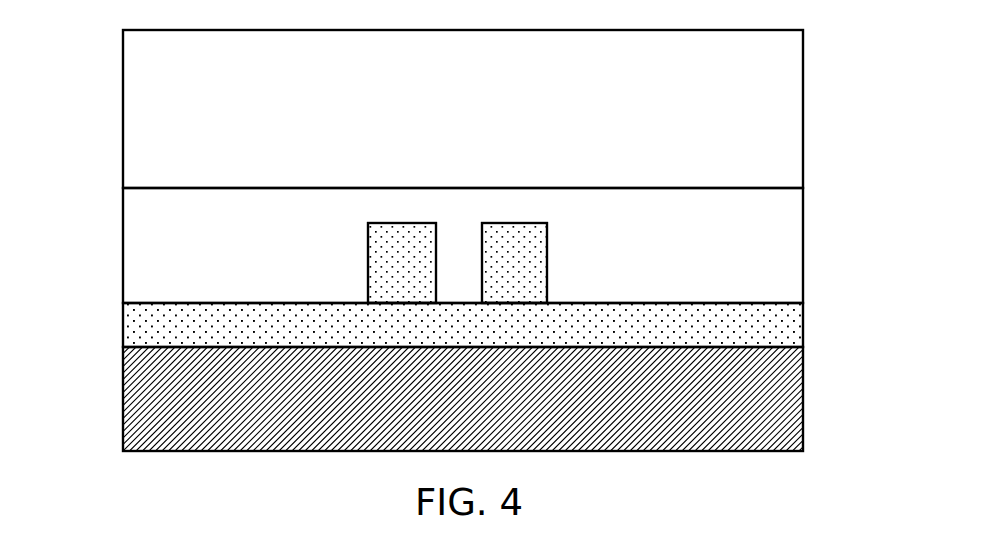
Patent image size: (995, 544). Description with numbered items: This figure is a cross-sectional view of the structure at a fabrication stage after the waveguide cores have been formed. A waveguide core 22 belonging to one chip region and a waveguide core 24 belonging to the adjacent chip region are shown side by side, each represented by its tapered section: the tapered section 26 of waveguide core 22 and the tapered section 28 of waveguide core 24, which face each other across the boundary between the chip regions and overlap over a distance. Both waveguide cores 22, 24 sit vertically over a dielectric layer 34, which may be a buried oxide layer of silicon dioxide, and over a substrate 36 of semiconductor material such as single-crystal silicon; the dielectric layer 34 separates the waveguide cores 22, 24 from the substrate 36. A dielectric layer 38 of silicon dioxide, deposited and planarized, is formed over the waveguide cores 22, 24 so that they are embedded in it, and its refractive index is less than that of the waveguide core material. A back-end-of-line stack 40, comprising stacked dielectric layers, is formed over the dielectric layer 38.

The waveguide core 22 is at (366, 224).
The waveguide core 24 is at (560, 226).
The tapered section 26 is at (408, 275).
The tapered section 28 is at (525, 275).
The dielectric layer 34 is at (770, 327).
The substrate 36 is at (155, 401).
The dielectric layer 38 is at (773, 236).
The back-end-of-line stack 40 is at (773, 127).